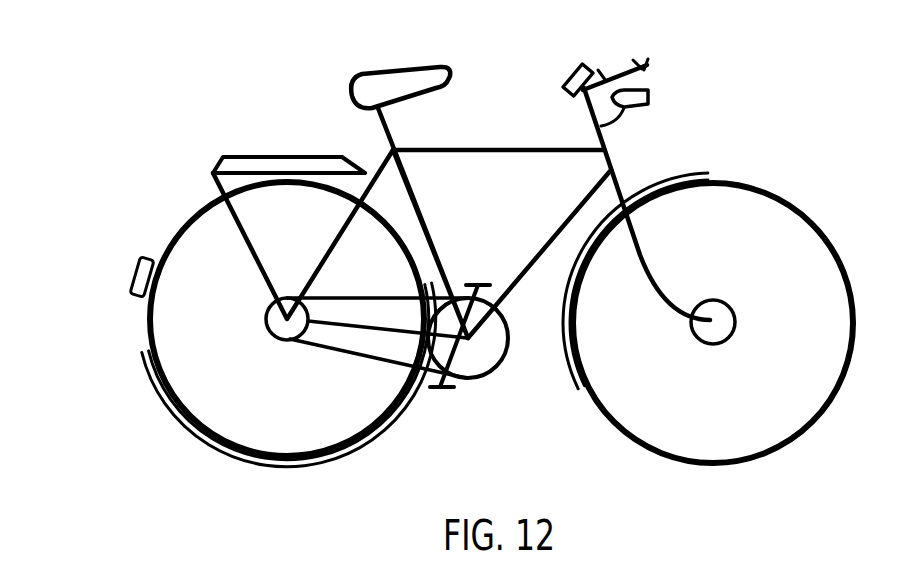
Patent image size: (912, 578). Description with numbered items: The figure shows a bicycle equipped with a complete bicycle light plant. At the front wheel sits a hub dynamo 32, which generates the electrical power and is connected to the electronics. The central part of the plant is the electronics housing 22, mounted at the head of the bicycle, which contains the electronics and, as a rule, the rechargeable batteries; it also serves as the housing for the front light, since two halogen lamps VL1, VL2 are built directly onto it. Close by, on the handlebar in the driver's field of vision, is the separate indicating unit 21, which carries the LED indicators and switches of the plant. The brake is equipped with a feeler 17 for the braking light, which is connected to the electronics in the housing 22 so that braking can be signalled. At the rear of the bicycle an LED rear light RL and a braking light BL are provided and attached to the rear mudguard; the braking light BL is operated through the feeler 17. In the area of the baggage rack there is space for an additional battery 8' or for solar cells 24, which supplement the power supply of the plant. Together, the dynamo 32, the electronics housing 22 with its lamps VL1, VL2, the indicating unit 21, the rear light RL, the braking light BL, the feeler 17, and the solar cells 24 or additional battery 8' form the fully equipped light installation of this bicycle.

The feeler 17 is at (652, 70).
The indicating unit 21 is at (572, 67).
The electronics housing 22 is at (654, 113).
The hub dynamo 32 is at (712, 345).
The solar cells 24 is at (289, 123).
The additional battery 8' is at (289, 123).
The halogen lamp VL1 is at (720, 107).
The halogen lamp VL2 is at (656, 100).
The braking light BL is at (90, 243).
The LED-rear light RL is at (127, 258).